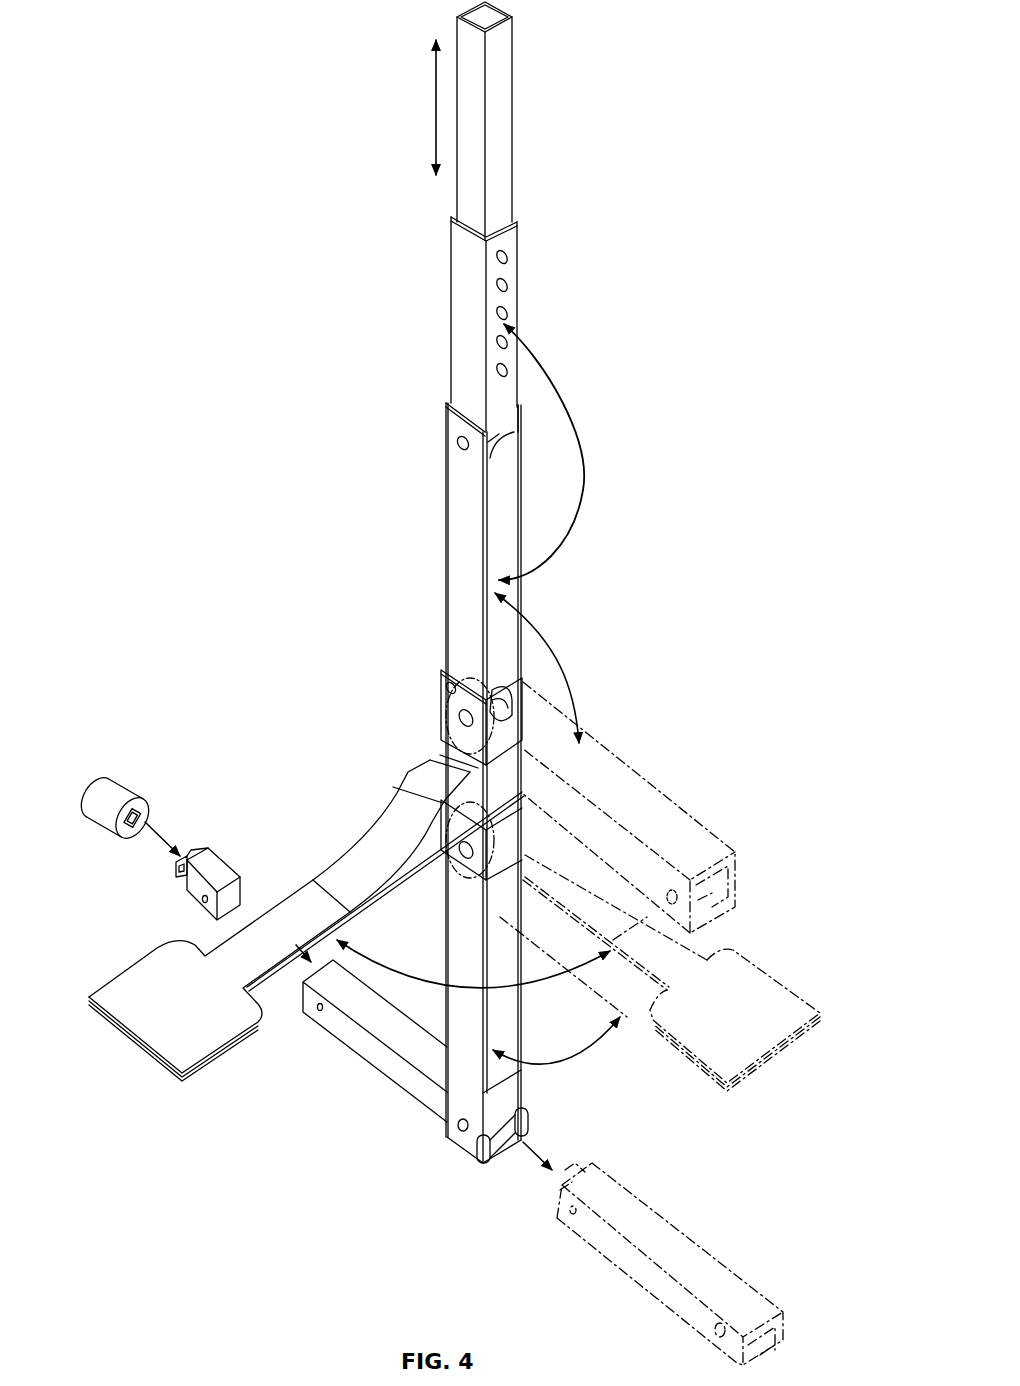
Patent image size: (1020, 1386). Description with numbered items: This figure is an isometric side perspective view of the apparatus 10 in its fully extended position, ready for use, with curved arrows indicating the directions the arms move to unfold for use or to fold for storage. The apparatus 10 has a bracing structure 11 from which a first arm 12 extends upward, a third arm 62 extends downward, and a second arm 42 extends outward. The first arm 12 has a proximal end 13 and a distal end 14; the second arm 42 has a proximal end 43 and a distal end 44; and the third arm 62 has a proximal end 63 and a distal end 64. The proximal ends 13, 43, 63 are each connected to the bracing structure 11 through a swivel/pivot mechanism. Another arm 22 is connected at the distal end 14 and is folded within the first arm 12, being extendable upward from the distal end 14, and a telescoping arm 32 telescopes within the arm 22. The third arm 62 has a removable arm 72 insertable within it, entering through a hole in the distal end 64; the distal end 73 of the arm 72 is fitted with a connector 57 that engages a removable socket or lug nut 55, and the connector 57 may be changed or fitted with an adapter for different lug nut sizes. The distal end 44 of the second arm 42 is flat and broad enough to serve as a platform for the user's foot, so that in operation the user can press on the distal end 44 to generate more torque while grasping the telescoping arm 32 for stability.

The apparatus 10 is at (718, 60).
The bracing structure 11 is at (445, 745).
The first arm 12 is at (455, 553).
The proximal end 13 is at (482, 698).
The distal end 14 is at (457, 424).
The arm 22 is at (462, 318).
The telescoping arm 32 is at (503, 150).
The second arm 42 is at (403, 813).
The proximal end 43 is at (522, 795).
The distal end 44 is at (113, 988).
The socket or lug nut 55 is at (118, 790).
The connector 57 is at (215, 870).
The third arm 62 is at (460, 947).
The proximal end 63 is at (522, 850).
The distal end 64 is at (467, 1107).
The arm 72 is at (383, 1060).
The distal end 73 is at (325, 975).